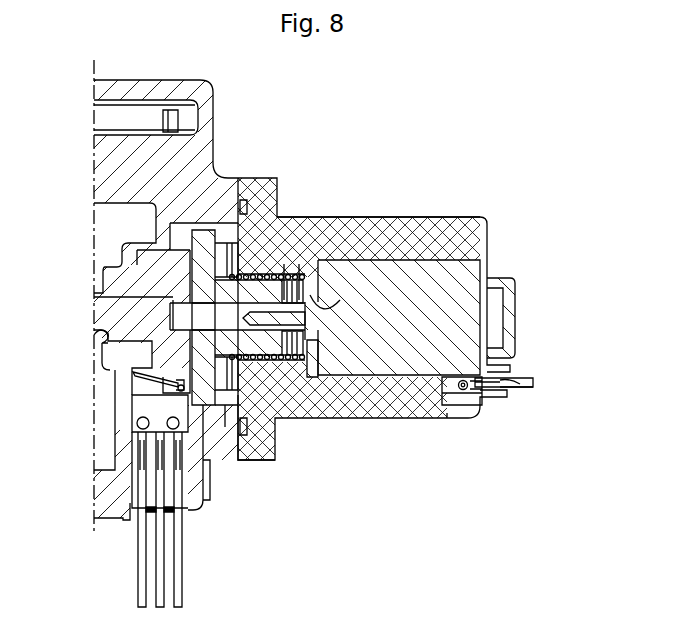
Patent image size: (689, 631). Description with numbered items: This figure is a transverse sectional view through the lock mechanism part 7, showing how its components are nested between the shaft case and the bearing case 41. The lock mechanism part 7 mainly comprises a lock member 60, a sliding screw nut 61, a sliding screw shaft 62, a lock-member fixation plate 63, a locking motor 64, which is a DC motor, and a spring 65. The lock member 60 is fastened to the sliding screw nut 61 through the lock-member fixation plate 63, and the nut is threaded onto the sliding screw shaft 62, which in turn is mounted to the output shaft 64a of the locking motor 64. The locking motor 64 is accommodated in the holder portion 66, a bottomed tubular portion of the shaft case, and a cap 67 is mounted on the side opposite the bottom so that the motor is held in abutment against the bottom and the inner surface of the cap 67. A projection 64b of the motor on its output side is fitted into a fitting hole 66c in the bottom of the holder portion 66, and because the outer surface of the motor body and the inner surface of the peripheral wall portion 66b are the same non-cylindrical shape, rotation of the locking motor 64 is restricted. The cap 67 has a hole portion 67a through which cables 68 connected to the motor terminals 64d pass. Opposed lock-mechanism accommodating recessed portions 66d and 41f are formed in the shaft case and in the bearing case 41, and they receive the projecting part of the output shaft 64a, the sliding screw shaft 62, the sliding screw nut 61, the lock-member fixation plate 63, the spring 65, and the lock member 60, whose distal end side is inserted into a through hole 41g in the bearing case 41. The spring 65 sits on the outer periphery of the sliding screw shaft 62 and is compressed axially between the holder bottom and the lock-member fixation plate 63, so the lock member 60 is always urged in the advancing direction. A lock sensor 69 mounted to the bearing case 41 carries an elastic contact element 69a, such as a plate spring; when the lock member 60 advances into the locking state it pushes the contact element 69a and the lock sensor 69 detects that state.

The lock mechanism part 7 is at (300, 280).
The bearing case 41 is at (210, 450).
The lock-mechanism accommodating recessed portion 41f is at (223, 410).
The through hole 41g is at (100, 335).
The lock member 60 is at (103, 312).
The sliding screw nut 61 is at (255, 295).
The sliding screw shaft 62 is at (295, 271).
The lock-member fixation plate 63 is at (240, 260).
The locking motor 64 is at (410, 273).
The output shaft 64a is at (303, 362).
The projection 64b is at (312, 343).
The motor terminals 64d is at (463, 395).
The spring 65 is at (272, 273).
The holder portion 66 is at (397, 420).
The peripheral wall portion 66b is at (397, 228).
The fitting hole 66c is at (335, 300).
The lock-mechanism accommodating recessed portion 66d is at (265, 365).
The cap 67 is at (518, 291).
The hole portion 67a is at (497, 382).
The cables 68 is at (523, 390).
The lock sensor 69 is at (147, 408).
The contact element 69a is at (140, 392).